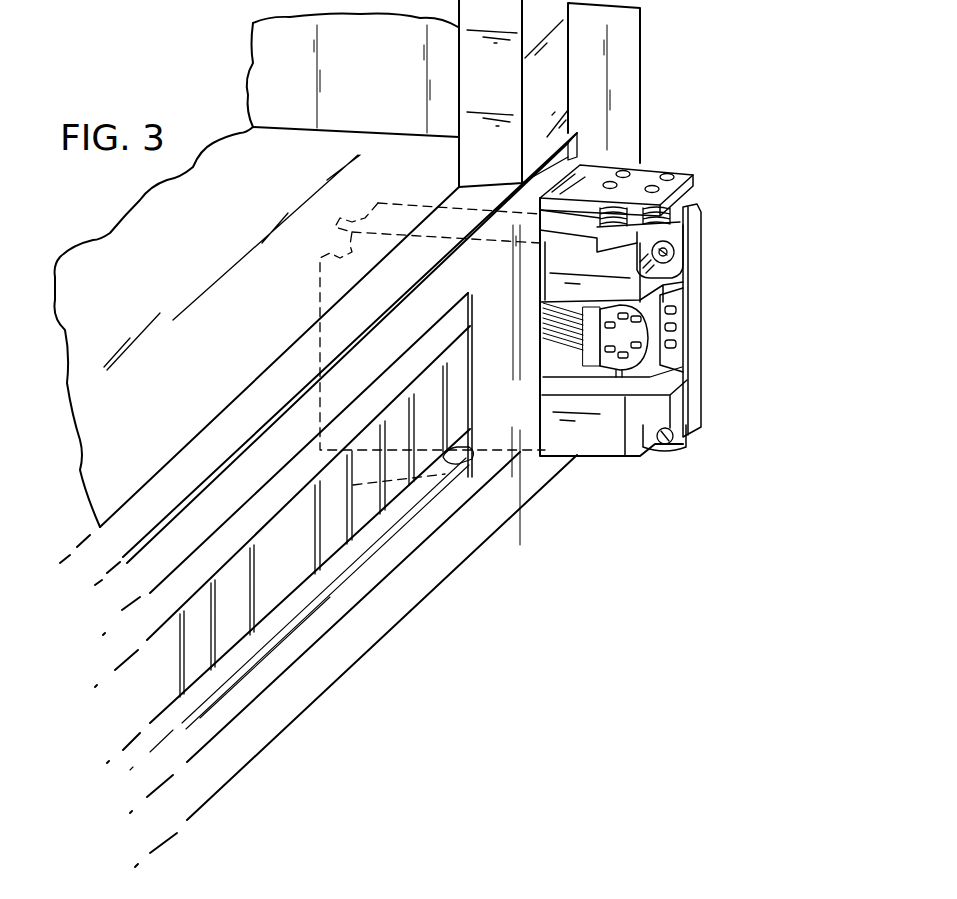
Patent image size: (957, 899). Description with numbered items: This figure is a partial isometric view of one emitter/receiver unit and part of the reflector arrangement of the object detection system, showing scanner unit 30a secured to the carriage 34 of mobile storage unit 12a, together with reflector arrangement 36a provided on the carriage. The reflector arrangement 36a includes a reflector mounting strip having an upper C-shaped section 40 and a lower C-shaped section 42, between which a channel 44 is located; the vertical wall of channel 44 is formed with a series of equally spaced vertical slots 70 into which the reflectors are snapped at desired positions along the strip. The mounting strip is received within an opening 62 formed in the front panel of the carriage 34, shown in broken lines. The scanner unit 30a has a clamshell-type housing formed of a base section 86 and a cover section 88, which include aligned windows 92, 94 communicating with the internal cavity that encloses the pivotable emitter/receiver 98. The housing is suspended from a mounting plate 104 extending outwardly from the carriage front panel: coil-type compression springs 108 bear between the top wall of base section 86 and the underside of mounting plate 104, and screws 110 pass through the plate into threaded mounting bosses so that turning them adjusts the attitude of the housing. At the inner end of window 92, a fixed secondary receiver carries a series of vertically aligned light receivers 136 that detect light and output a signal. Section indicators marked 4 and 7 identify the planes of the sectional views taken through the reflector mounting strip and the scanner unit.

The mobile storage unit 12a is at (702, 65).
The reflector arrangement 36a is at (420, 578).
The upper C-shaped section 40 is at (370, 412).
The vertical slots 70 is at (182, 656).
The lower C-shaped section 42 is at (333, 608).
The channel 44 is at (437, 470).
The carriage 34 is at (519, 525).
The opening in the front panel of the carriage 62 is at (524, 465).
The scanner unit 30a is at (734, 293).
The mounting plate 104 is at (642, 172).
The screws 110 is at (612, 182).
The coil-type compression springs 108 is at (683, 202).
The base section 86 is at (708, 266).
The cover section 88 is at (672, 408).
The window 92 is at (678, 372).
The light receivers 136 is at (676, 346).
The window 94 is at (618, 394).
The pivotable emitter/receiver 98 is at (578, 368).
The section line 7 is at (433, 173).
The section line 4 is at (263, 470).